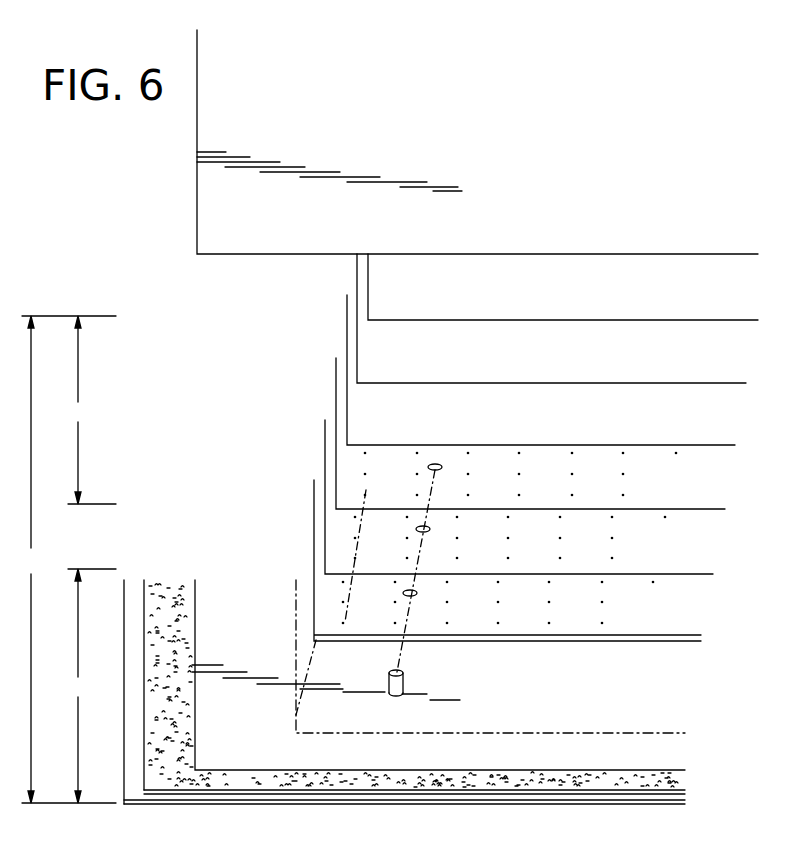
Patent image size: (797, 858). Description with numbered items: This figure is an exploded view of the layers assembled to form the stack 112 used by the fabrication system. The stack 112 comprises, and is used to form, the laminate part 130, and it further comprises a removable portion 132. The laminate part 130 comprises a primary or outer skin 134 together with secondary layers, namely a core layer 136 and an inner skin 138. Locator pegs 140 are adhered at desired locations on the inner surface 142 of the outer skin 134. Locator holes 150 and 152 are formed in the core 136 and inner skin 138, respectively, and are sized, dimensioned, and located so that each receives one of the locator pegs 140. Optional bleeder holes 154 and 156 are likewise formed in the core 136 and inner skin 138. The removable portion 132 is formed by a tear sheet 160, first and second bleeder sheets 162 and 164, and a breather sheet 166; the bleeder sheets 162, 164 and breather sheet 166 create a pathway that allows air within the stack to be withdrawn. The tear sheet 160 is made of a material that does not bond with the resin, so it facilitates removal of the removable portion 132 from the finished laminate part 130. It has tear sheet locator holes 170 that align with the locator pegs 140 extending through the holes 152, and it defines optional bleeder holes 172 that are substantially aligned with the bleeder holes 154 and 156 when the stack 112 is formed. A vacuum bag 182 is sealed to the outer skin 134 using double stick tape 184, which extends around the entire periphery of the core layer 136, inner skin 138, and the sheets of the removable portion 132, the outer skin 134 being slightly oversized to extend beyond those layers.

The stack 112 is at (65, 559).
The laminate part 130 is at (88, 686).
The removable portion 132 is at (88, 410).
The outer skin 134 is at (246, 757).
The core layer 136 is at (328, 603).
The inner skin 138 is at (337, 525).
The locator pegs 140 is at (390, 679).
The inner surface 142 is at (343, 757).
The locator holes 150 is at (417, 595).
The locator holes 152 is at (416, 530).
The bleeder holes 154 is at (652, 603).
The bleeder holes 156 is at (665, 540).
The tear sheet 160 is at (346, 458).
The first bleeder sheet 162 is at (362, 413).
The second bleeder sheet 164 is at (378, 355).
The breather sheet 166 is at (387, 292).
The tear sheet locator holes 170 is at (428, 468).
The bleeder holes 172 is at (675, 475).
The vacuum bag 182 is at (222, 210).
The double stick tape 184 is at (168, 775).